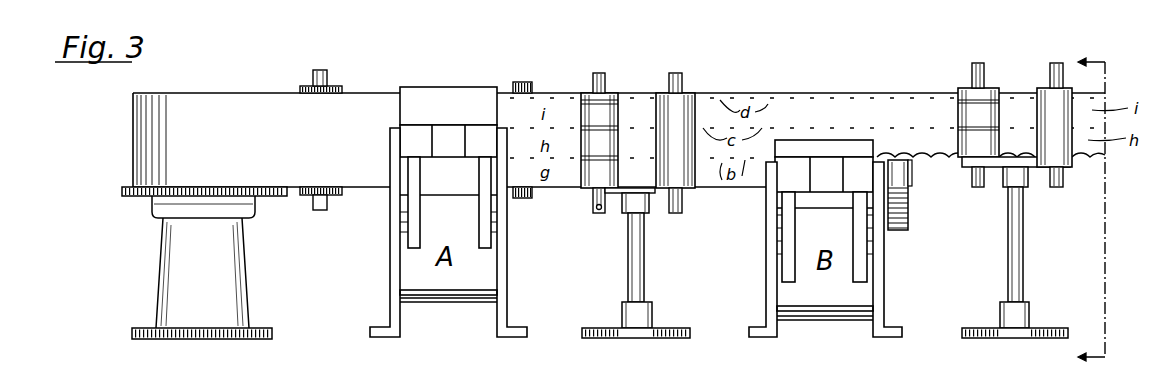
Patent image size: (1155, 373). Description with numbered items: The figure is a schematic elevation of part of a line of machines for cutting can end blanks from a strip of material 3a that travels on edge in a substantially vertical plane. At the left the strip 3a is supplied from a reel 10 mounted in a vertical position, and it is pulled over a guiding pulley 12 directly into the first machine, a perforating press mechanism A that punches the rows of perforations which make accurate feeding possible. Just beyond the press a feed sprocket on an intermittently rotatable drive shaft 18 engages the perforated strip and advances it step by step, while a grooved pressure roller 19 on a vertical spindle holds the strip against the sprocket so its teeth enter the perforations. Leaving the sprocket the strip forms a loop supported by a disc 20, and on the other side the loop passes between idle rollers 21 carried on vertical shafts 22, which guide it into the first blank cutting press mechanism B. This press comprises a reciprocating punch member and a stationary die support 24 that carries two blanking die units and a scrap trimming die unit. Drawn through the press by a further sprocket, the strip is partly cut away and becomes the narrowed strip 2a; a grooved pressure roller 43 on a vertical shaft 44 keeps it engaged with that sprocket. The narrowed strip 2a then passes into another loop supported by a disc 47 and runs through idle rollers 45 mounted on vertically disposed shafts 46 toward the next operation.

The strip of material 3a is at (619, 140).
The reel 10 is at (123, 192).
The guiding pulley 12 is at (334, 86).
The drive shaft 18 is at (598, 205).
The grooved pressure roller 19 is at (592, 177).
The disc 20 is at (626, 188).
The idle rollers 21 is at (681, 173).
The vertical shafts 22 is at (674, 208).
The stationary die support 24 is at (819, 170).
The narrowed strip 2a is at (933, 145).
The grooved pressure roller 43 is at (990, 89).
The vertical shaft 44 is at (977, 80).
The idle rollers 45 is at (1067, 160).
The vertically disposed shafts 46 is at (1059, 181).
The disc 47 is at (1004, 166).